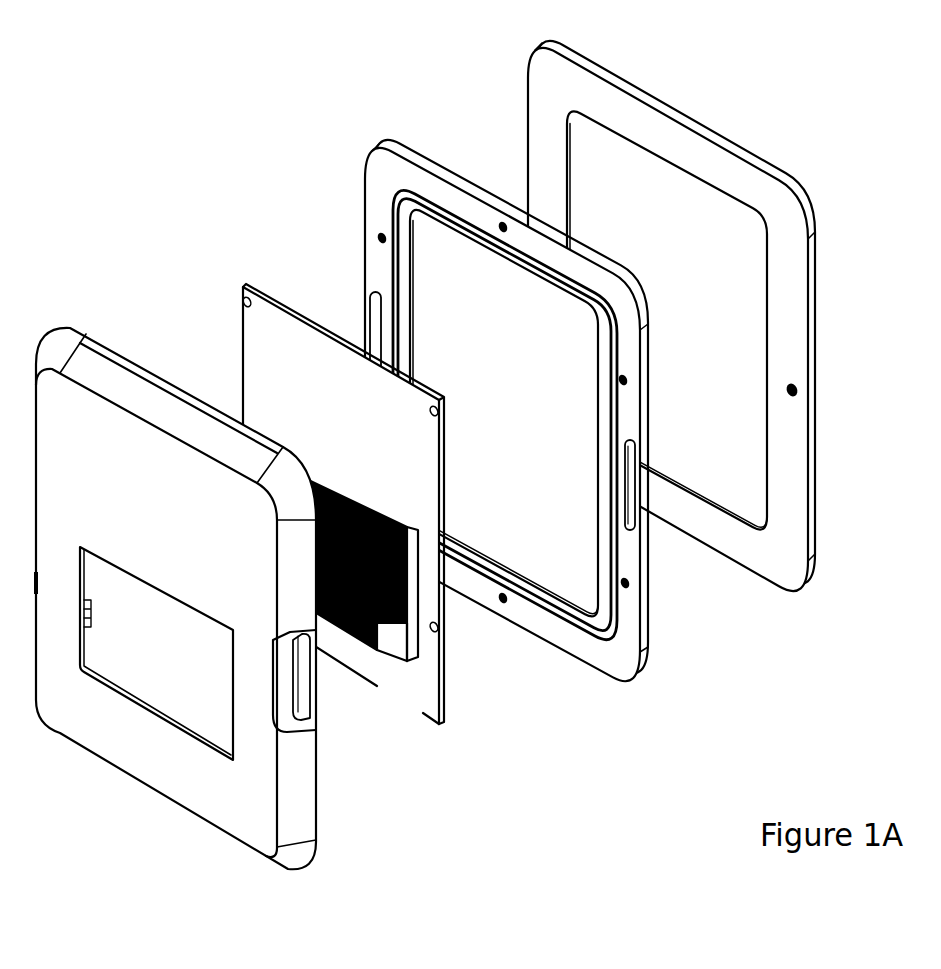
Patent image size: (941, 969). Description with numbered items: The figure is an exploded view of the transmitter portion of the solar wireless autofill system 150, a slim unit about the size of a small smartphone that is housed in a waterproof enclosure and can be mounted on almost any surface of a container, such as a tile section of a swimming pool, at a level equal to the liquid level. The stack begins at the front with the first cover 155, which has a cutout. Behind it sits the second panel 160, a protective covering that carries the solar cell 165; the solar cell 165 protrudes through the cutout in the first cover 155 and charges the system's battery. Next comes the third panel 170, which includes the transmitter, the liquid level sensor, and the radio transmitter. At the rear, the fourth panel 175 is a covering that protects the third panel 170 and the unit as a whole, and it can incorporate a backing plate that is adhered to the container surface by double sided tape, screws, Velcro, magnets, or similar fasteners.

The solar wireless autofill system 150 is at (486, 455).
The first cover 155 is at (175, 598).
The second panel 160 is at (343, 532).
The solar cell 165 is at (359, 628).
The third panel 170 is at (506, 410).
The fourth panel 175 is at (671, 316).